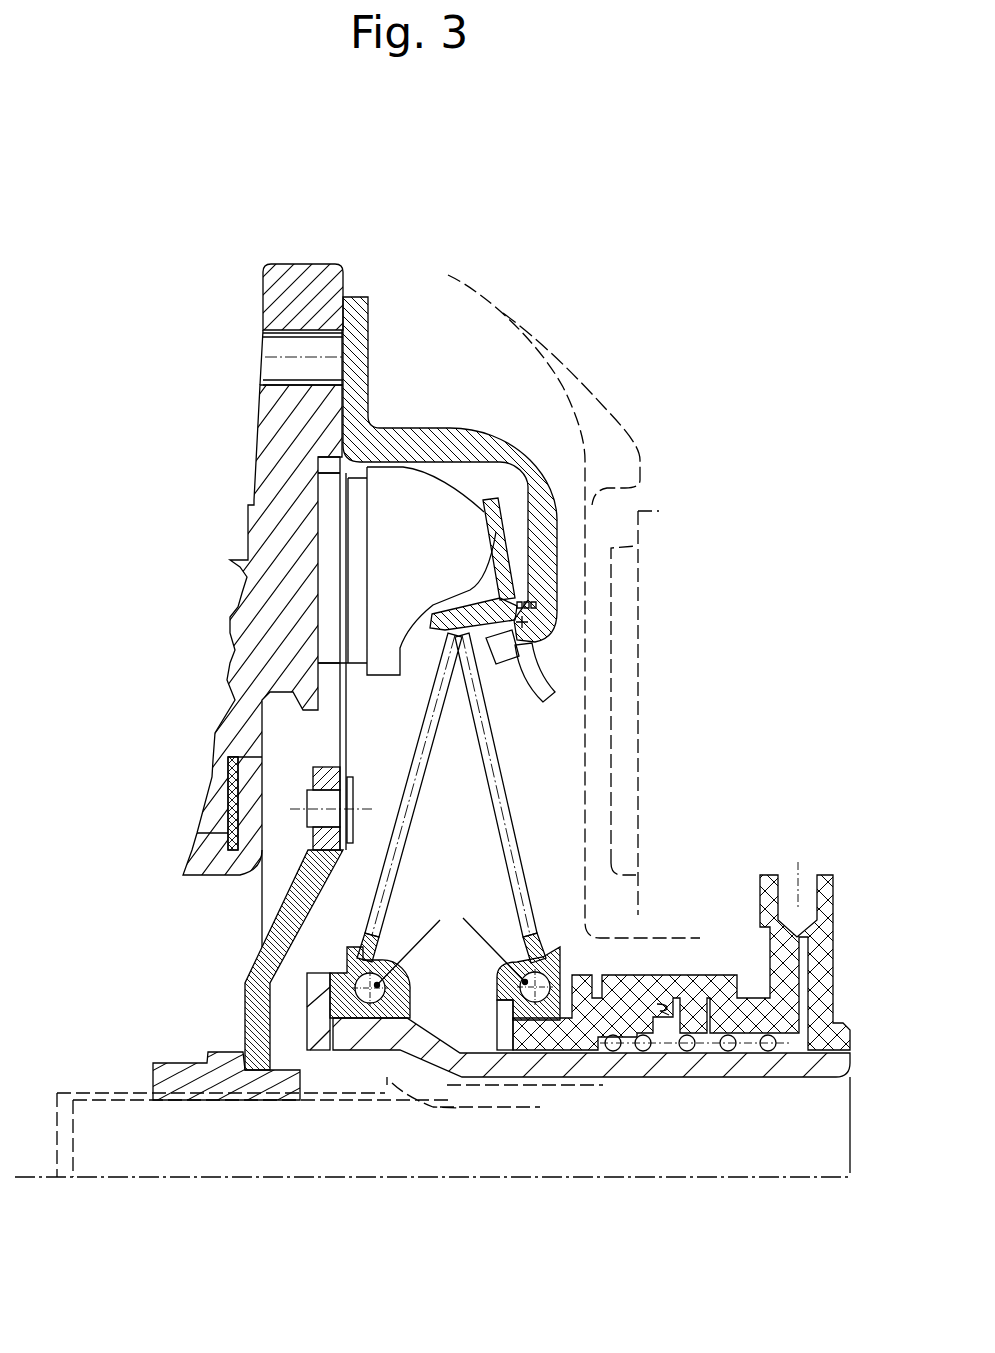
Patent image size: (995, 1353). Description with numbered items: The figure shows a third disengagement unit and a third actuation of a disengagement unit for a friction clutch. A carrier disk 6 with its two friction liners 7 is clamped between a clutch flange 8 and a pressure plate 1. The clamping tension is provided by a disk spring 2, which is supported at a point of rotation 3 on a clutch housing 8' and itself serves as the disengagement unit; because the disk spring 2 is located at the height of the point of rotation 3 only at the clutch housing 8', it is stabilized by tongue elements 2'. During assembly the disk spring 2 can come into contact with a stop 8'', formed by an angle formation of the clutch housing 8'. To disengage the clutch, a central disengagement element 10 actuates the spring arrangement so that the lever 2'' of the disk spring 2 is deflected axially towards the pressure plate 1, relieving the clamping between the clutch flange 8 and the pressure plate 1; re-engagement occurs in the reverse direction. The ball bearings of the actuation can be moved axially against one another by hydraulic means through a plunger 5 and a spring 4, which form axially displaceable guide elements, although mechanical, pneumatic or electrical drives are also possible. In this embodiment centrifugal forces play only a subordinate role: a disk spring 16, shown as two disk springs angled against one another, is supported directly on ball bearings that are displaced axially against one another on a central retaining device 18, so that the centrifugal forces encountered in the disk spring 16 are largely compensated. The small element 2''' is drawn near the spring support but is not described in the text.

The pressure plate 1 is at (403, 523).
The disk spring 2 is at (608, 476).
The tongue elements 2' is at (629, 700).
The lever of disk spring 2'' is at (587, 546).
The spring support 2''' is at (632, 557).
The point of rotation 3 is at (523, 620).
The spring 4 is at (752, 1075).
The plunger 5 is at (620, 1050).
The carrier disk 6 is at (343, 570).
The friction liners 7 is at (328, 542).
The clutch flange 8 is at (267, 293).
The clutch housing 8' is at (493, 469).
The stop 8'' is at (615, 627).
The central disengagement element 10 is at (430, 1108).
The disk spring 16 is at (402, 852).
The central retaining device 18 is at (426, 1053).